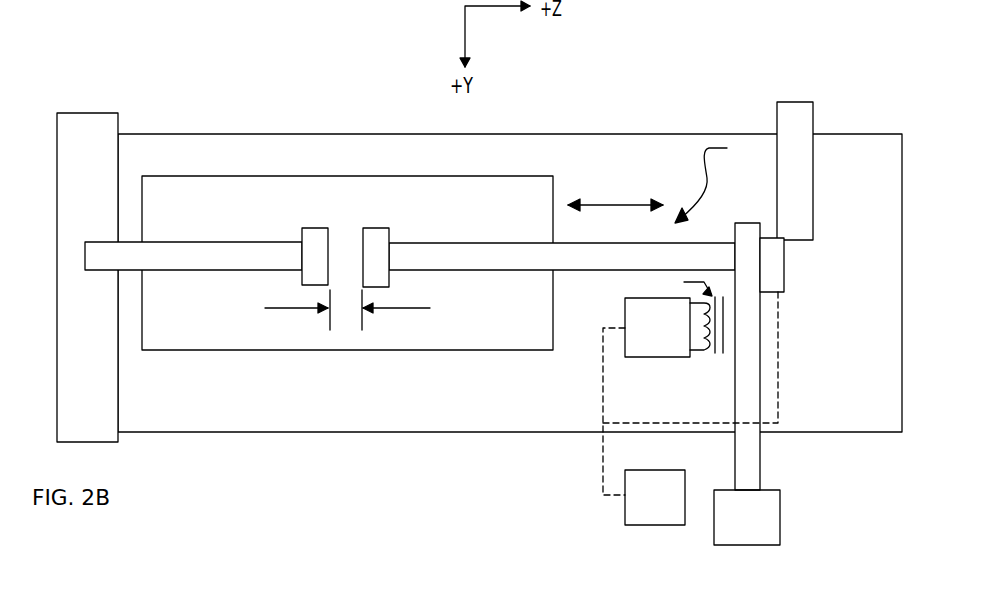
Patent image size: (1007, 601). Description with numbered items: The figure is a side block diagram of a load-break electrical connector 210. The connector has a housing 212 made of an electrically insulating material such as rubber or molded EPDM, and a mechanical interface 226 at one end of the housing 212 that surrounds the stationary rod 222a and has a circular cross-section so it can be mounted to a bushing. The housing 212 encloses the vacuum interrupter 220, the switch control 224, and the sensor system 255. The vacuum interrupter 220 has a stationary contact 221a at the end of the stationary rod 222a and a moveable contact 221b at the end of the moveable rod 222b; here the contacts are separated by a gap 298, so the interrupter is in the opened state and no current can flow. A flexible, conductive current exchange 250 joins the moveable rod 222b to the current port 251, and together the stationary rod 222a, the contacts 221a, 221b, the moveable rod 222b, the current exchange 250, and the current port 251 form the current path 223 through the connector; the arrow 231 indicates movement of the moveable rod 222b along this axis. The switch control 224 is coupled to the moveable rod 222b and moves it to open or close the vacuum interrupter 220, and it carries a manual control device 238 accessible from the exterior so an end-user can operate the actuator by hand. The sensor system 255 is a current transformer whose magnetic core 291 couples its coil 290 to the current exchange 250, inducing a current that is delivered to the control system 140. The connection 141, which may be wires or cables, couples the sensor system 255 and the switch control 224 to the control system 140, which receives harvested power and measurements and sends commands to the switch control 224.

The electrical connector 210 is at (673, 85).
The housing 212 is at (325, 134).
The vacuum interrupter 220 is at (347, 263).
The stationary contact 221a is at (316, 237).
The moveable contact 221b is at (380, 235).
The stationary rod 222a is at (236, 262).
The moveable rod 222b is at (473, 258).
The current path 223 is at (720, 183).
The switch control 224 is at (770, 256).
The mechanical interface 226 is at (97, 157).
The axial movement direction 231 is at (625, 205).
The manual control device 238 is at (797, 112).
The current exchange 250 is at (748, 330).
The current port 251 is at (747, 517).
The sensor system 255 is at (657, 327).
The coil 290 is at (712, 362).
The magnetic core 291 is at (677, 285).
The gap 298 is at (347, 314).
The control system 140 is at (655, 497).
The connection 141 is at (603, 458).